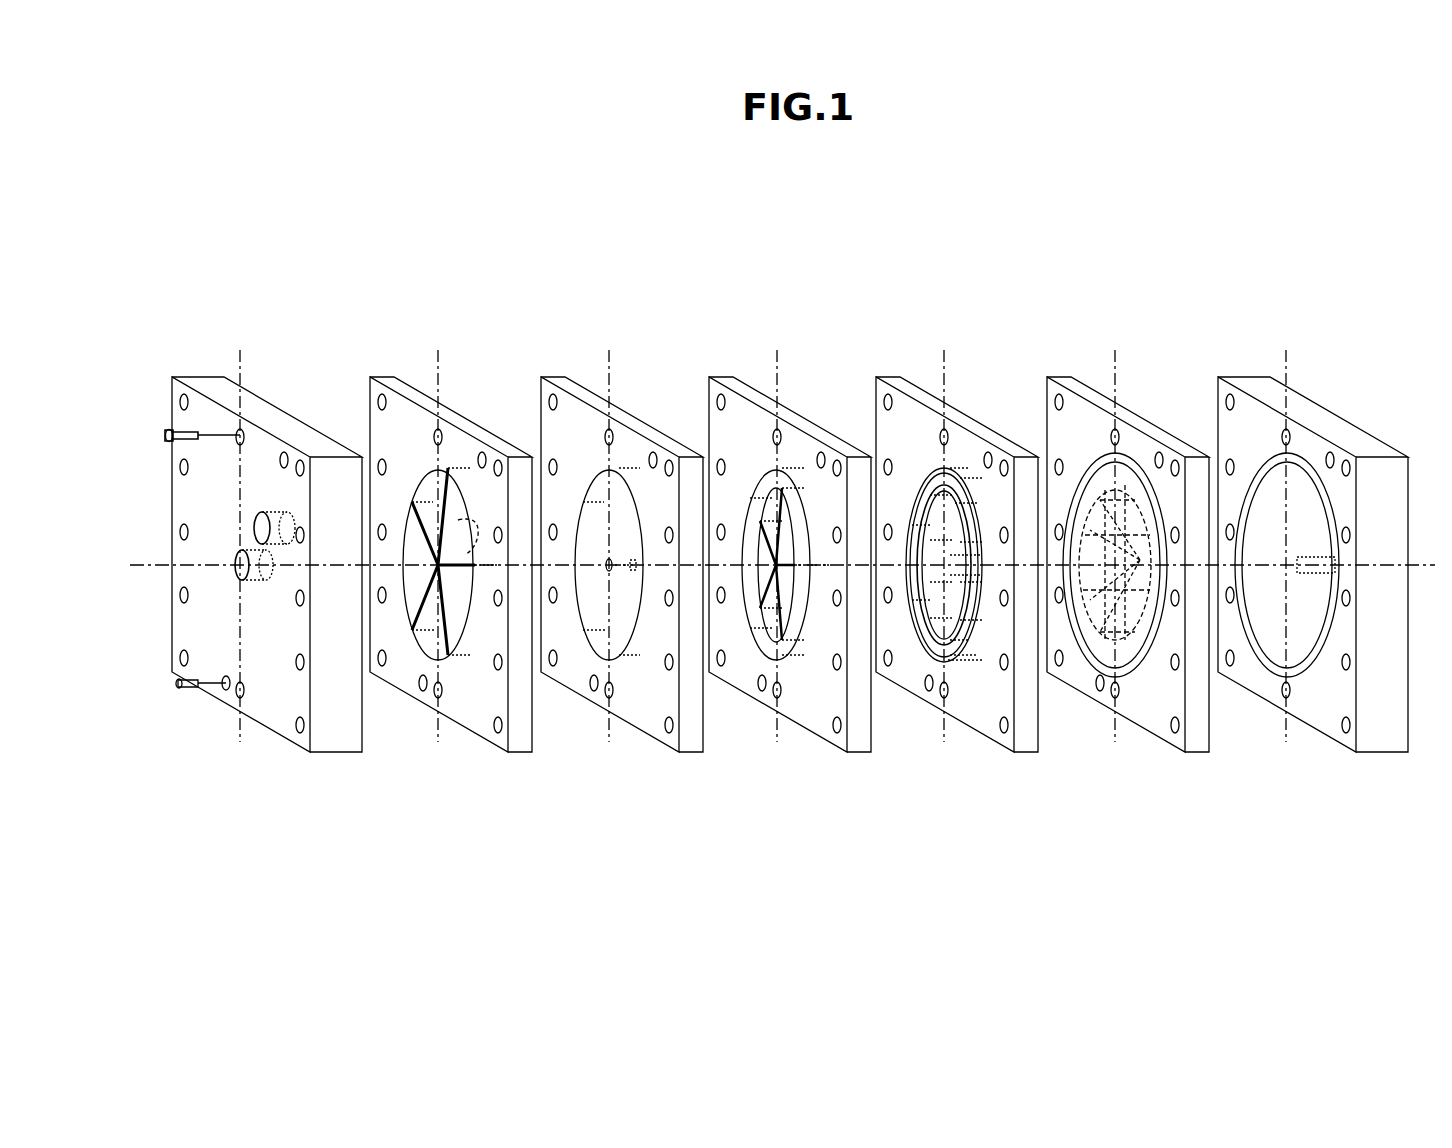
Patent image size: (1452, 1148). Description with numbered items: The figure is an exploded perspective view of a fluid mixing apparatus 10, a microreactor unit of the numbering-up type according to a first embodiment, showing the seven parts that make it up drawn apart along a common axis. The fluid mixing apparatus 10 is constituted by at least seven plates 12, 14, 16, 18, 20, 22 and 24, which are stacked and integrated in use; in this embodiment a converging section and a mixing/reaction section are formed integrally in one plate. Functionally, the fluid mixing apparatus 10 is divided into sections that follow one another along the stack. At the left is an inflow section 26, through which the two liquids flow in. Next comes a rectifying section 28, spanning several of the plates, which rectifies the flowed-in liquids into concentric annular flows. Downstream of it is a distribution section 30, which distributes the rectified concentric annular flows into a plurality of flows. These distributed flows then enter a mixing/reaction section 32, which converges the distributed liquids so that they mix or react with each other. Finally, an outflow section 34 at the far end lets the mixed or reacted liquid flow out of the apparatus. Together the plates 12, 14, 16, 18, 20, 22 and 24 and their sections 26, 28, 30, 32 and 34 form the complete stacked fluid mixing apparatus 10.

The fluid mixing apparatus 10 is at (1273, 235).
The plate 12 is at (310, 753).
The plate 14 is at (504, 753).
The plate 16 is at (675, 753).
The plate 18 is at (843, 753).
The plate 20 is at (1010, 753).
The plate 22 is at (1180, 753).
The plate 24 is at (1352, 753).
The inflow section 26 is at (258, 338).
The rectifying section 28 is at (850, 345).
The distribution section 30 is at (963, 338).
The mixing/reaction section 32 is at (1133, 338).
The outflow section 34 is at (1305, 338).